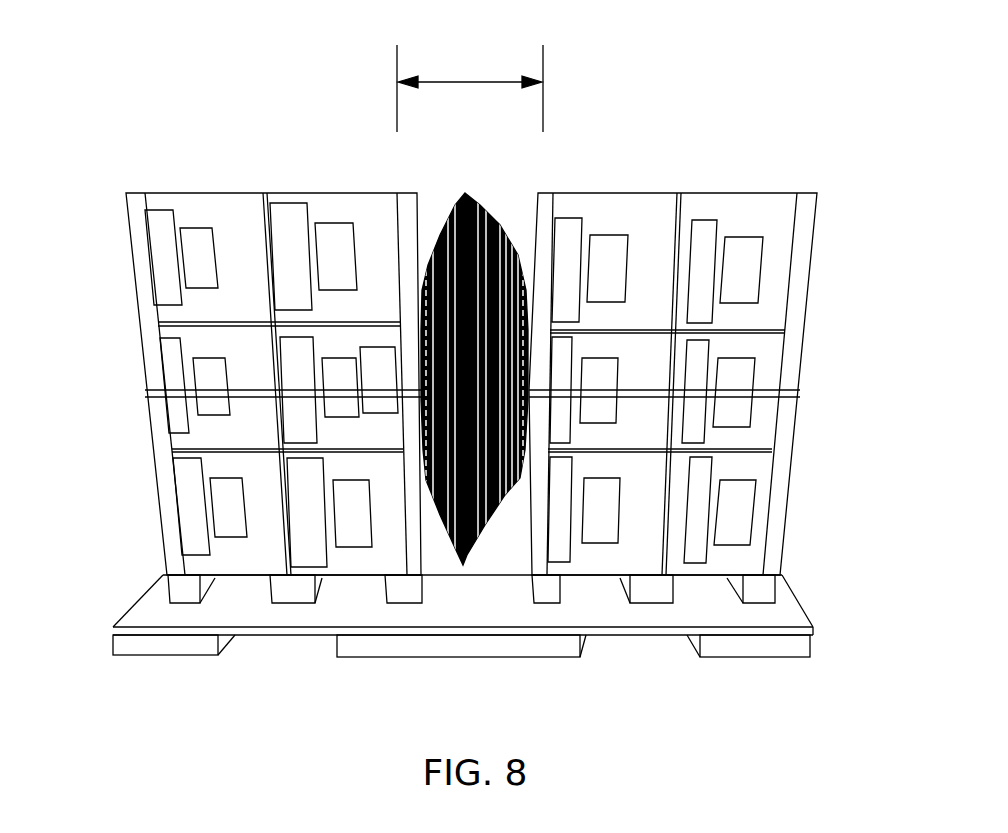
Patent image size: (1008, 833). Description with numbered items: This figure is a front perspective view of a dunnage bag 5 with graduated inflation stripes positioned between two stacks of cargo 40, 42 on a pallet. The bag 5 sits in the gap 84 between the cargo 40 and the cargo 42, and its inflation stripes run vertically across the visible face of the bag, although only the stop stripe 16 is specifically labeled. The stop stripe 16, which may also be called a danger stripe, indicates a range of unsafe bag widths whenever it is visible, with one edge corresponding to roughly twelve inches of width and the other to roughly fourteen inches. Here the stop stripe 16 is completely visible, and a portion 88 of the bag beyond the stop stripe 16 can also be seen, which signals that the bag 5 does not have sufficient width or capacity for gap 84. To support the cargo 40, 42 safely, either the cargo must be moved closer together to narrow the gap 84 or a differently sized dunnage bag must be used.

The dunnage bag 5 is at (636, 90).
The gap 84 is at (470, 88).
The cargo 40 is at (104, 358).
The cargo 42 is at (821, 409).
The stop stripe 16 is at (517, 312).
The portion of the bag beyond the stop stripe 88 is at (525, 362).